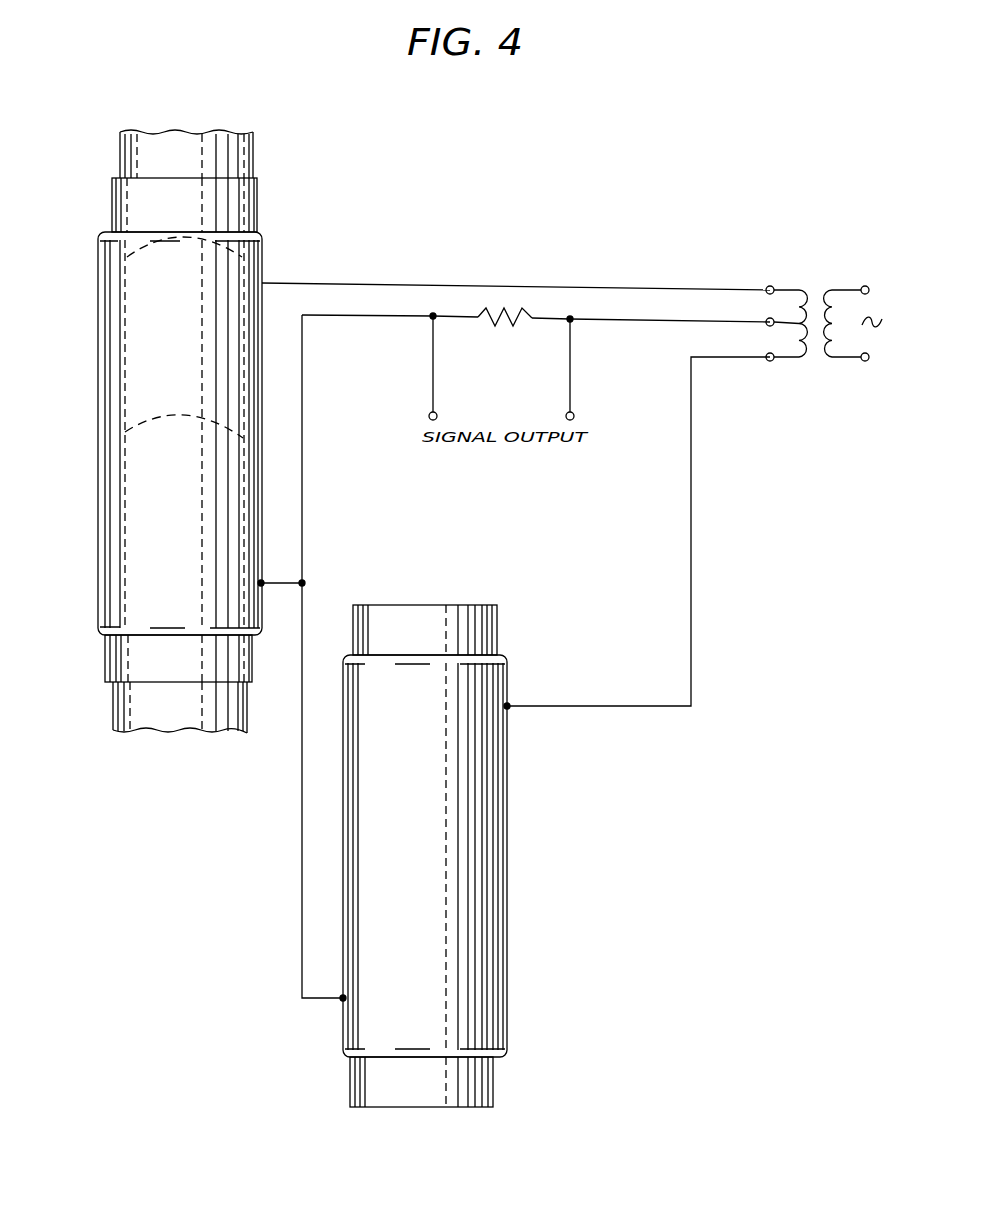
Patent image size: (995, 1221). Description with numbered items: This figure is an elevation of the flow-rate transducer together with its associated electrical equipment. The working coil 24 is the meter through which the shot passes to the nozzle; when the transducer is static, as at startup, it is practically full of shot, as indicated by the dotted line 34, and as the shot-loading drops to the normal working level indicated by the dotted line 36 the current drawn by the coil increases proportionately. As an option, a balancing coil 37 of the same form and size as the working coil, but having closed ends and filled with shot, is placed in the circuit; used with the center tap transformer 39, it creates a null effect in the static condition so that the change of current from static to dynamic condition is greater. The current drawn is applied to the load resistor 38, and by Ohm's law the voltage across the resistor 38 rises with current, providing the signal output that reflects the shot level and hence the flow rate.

The working coil 24 is at (92, 393).
The dotted line indicating full shot level 34 is at (158, 250).
The dotted line indicating normal working shot-level 36 is at (160, 427).
The balancing coil 37 is at (507, 846).
The load resistor 38 is at (490, 326).
The center tap transformer 39 is at (814, 292).